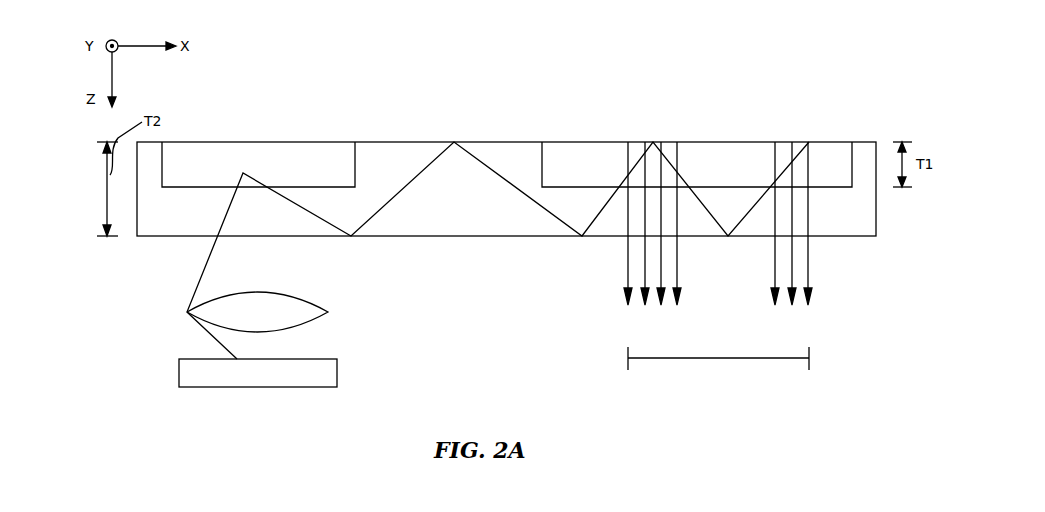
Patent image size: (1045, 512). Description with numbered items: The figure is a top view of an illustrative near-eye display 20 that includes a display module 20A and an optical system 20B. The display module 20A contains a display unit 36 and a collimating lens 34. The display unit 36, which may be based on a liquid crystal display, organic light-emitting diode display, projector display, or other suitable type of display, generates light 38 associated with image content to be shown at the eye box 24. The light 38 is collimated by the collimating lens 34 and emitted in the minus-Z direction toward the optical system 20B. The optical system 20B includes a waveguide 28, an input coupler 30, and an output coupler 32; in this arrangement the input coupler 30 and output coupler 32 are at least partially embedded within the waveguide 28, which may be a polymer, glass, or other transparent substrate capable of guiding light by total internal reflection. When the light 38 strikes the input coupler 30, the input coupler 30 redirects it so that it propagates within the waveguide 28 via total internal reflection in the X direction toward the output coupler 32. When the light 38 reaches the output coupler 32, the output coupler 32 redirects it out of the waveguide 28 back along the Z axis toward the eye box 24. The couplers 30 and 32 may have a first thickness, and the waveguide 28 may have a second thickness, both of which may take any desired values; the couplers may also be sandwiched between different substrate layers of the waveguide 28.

The display 20 is at (648, 72).
The display module 20A is at (118, 282).
The optical system 20B is at (72, 138).
The eye box 24 is at (809, 363).
The waveguide 28 is at (417, 222).
The input coupler 30 is at (326, 152).
The output coupler 32 is at (590, 152).
The collimating lens 34 is at (297, 294).
The display unit 36 is at (337, 371).
The light 38 is at (494, 176).